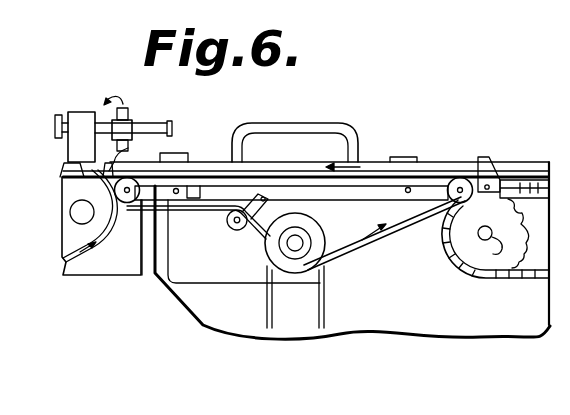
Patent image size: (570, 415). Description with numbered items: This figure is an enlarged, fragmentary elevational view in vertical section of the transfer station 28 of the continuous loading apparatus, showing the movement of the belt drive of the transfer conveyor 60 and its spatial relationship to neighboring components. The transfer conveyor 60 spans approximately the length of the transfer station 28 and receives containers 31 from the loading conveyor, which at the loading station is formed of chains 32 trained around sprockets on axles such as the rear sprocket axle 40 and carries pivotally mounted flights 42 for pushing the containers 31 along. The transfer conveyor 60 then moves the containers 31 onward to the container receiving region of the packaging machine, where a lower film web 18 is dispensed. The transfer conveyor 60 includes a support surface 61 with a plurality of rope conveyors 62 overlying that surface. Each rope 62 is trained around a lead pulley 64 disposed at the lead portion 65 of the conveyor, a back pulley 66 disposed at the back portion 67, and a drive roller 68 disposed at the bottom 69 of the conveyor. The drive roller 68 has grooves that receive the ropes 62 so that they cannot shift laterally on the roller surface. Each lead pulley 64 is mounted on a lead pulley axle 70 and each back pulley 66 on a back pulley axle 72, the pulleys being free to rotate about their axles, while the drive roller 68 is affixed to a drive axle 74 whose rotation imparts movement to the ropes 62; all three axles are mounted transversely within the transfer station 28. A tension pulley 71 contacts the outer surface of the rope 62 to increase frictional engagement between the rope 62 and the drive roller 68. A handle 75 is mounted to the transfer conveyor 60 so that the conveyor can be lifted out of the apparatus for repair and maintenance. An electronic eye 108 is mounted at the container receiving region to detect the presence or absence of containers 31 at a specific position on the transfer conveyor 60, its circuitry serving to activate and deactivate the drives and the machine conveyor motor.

The lower film web 18 is at (74, 274).
The transfer station 28 is at (331, 101).
The containers 31 is at (196, 169).
The chains 32 is at (522, 178).
The rear sprocket axle 40 is at (495, 238).
The flights 42 is at (486, 159).
The transfer conveyor 60 is at (373, 136).
The support surface 61 is at (318, 182).
The rope conveyors 62 is at (290, 172).
The lead pulley 64 is at (449, 178).
The lead portion 65 is at (459, 165).
The back pulley 66 is at (128, 204).
The back portion 67 is at (133, 154).
The drive roller 68 is at (263, 248).
The bottom 69 is at (352, 274).
The lead pulley axle 70 is at (462, 193).
The tension pulleys 71 is at (228, 225).
The back pulley axle 72 is at (113, 137).
The drive axle 74 is at (305, 238).
The handles 75 is at (303, 122).
The electronic eye 108 is at (137, 123).